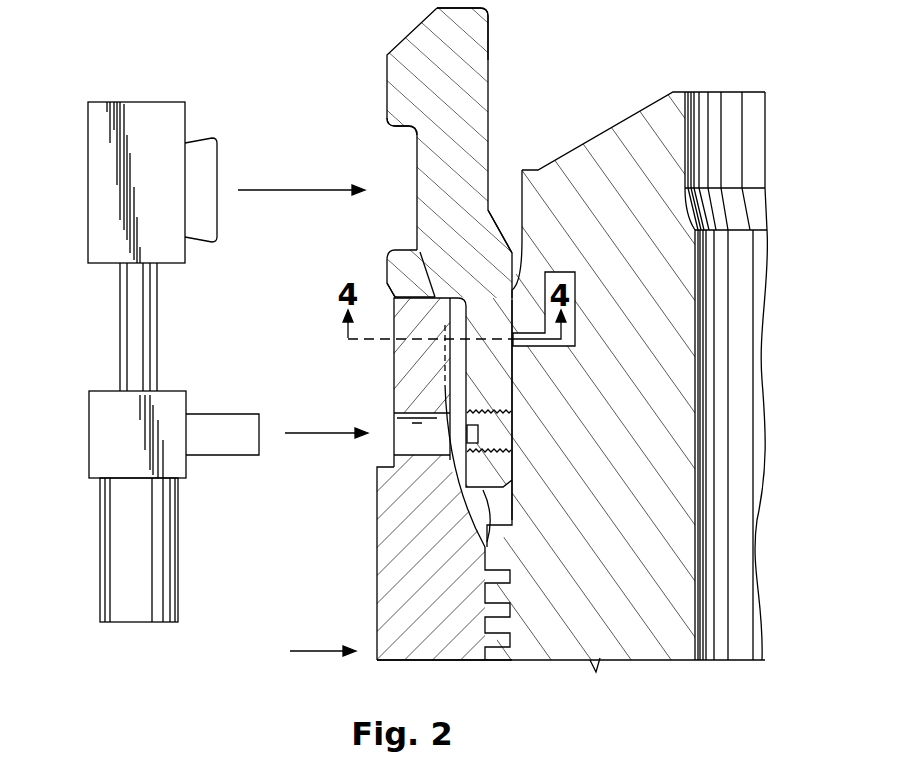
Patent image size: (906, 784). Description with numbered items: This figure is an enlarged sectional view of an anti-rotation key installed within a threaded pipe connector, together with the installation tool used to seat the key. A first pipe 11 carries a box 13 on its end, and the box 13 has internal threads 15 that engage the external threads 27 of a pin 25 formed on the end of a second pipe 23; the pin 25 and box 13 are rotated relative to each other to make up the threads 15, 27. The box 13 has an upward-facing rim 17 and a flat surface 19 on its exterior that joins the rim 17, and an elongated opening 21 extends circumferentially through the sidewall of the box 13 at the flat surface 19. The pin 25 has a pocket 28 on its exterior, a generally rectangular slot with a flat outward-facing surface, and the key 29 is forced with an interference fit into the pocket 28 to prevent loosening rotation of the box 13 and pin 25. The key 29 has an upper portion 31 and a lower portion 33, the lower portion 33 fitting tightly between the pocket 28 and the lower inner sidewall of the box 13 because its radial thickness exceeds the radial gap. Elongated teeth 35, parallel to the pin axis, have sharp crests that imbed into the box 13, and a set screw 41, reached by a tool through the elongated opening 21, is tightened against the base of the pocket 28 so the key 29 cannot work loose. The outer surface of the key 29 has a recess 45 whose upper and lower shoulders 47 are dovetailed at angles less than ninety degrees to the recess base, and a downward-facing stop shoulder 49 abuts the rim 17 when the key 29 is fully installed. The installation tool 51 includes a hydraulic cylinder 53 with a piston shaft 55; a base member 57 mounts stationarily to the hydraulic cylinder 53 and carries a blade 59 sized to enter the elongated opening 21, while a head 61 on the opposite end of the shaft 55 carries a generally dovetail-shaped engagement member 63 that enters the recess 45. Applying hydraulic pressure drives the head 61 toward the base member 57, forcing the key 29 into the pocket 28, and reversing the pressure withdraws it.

The first pipe 11 is at (384, 651).
The box 13 is at (377, 600).
The internal threads 15 is at (517, 577).
The rim 17 is at (417, 245).
The flat surface 19 is at (394, 358).
The elongated opening 21 is at (394, 446).
The second pipe 23 is at (652, 72).
The pin 25 is at (696, 274).
The external threads 27 is at (478, 606).
The pocket 28 is at (513, 387).
The key 29 is at (500, 89).
The upper portion 31 is at (488, 43).
The lower portion 33 is at (515, 470).
The teeth 35 is at (447, 382).
The set screw 41 is at (467, 407).
The recess 45 is at (405, 155).
The upper and lower shoulders 47 is at (397, 130).
The stop shoulder 49 is at (393, 294).
The installation tool 51 is at (181, 75).
The hydraulic cylinder 53 is at (100, 553).
The piston shaft 55 is at (120, 320).
The base member 57 is at (89, 428).
The blade 59 is at (213, 414).
The head 61 is at (88, 168).
The engagement member 63 is at (208, 138).